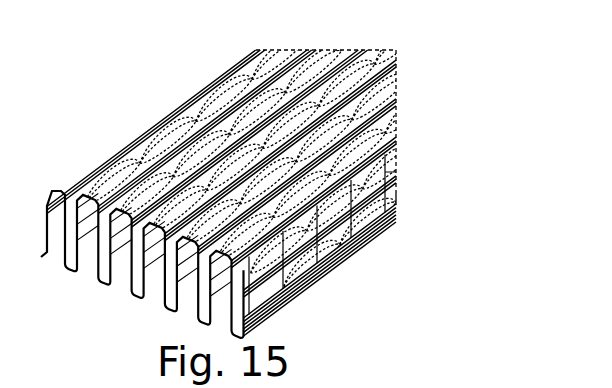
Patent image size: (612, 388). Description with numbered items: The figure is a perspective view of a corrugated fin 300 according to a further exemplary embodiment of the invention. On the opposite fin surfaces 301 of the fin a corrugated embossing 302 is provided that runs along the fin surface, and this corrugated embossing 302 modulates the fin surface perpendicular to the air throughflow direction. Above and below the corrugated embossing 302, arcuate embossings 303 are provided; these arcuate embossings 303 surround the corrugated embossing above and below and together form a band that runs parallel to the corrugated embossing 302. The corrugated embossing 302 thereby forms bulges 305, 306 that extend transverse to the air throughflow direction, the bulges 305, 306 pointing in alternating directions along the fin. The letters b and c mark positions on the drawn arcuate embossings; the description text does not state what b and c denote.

The corrugated fin 300 is at (411, 80).
The fin surfaces 301 is at (358, 252).
The corrugated embossing 302 is at (396, 183).
The arcuate embossing 303 is at (396, 157).
The bulge 305 is at (285, 301).
The bulge 306 is at (324, 277).
The dome spacing b is at (162, 140).
The dome spacing c is at (215, 115).